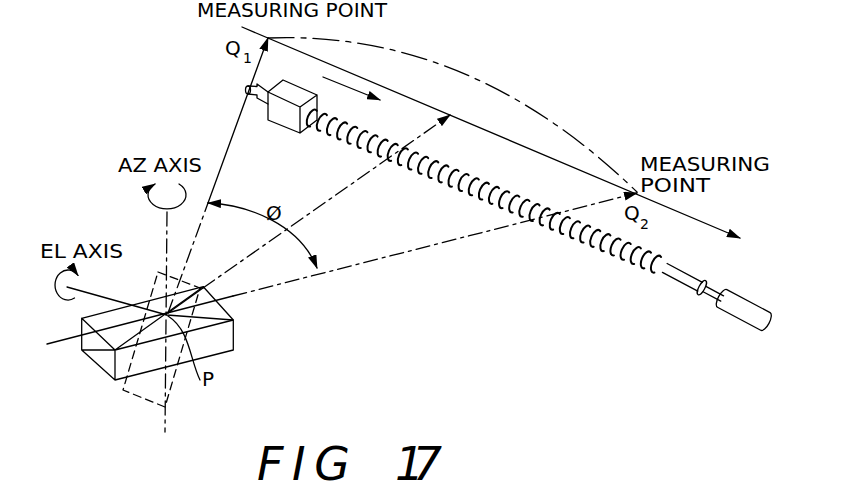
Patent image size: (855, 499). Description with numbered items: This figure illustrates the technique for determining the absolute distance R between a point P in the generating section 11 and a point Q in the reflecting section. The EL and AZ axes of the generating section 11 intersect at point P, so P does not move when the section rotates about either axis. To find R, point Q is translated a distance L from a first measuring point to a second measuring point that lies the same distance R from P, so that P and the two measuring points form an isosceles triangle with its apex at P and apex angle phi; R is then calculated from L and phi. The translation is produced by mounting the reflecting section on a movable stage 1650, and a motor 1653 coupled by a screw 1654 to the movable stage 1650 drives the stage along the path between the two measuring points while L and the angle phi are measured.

The generating section 11 is at (215, 345).
The movable stage 1650 is at (286, 117).
The screw 1654 is at (607, 260).
The motor 1653 is at (733, 319).